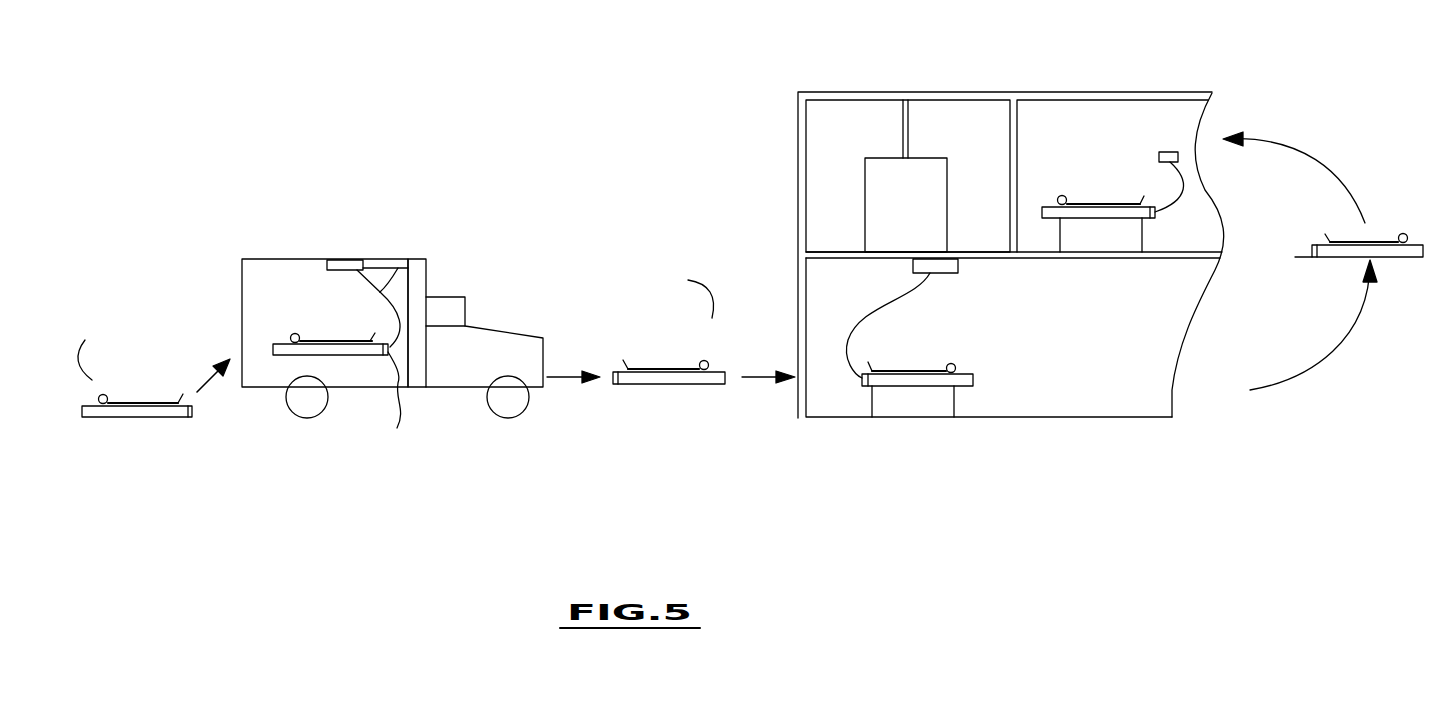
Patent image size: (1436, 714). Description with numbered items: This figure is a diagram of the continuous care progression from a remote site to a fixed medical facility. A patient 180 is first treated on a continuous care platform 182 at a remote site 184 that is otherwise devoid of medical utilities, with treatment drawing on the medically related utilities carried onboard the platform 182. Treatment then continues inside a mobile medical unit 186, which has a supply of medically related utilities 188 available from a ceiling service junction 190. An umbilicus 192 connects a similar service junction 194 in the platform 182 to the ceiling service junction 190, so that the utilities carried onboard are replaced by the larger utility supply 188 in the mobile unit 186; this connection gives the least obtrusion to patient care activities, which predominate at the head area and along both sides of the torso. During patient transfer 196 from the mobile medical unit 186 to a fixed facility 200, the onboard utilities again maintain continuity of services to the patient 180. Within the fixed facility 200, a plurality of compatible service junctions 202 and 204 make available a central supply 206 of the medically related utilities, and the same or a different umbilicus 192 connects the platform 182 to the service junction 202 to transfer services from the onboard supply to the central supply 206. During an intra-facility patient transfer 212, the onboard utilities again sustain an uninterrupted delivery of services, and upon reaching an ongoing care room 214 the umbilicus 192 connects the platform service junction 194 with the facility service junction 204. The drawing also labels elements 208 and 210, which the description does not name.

The patient 180 is at (132, 398).
The continuous care platform 182 is at (158, 413).
The remote site 184 is at (106, 356).
The mobile medical unit 186 is at (242, 259).
The supply of medically related utilities 188 is at (418, 278).
The ceiling service junction 190 is at (335, 270).
The umbilicus 192 is at (398, 268).
The platform service junction 194 is at (376, 399).
The patient transfer 196 is at (678, 294).
The fixed facility 200 is at (853, 90).
The service junction 202 is at (913, 267).
The facility service junction 204 is at (1159, 155).
The central supply 206 is at (921, 216).
The emergency room 208 is at (1117, 341).
The transfer within hospital 210 is at (1177, 258).
The intra-facility patient transfer 212 is at (1395, 180).
The ongoing care room 214 is at (1030, 118).